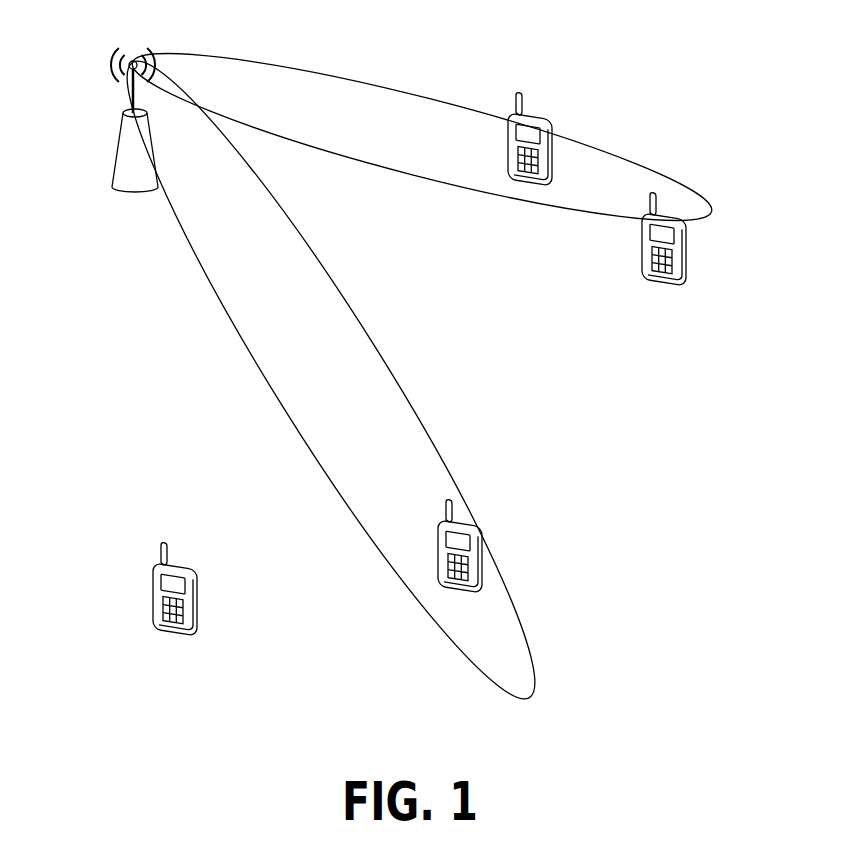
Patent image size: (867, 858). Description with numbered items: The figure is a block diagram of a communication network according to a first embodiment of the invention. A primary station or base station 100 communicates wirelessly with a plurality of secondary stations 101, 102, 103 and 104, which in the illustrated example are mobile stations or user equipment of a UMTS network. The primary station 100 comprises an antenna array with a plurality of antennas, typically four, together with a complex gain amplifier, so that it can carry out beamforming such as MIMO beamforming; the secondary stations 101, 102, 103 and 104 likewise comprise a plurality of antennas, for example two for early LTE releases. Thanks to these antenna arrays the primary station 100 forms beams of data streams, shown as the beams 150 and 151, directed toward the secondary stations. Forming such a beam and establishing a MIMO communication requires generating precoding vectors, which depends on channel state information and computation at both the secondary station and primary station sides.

The primary station 100 is at (117, 148).
The secondary station 101 is at (508, 154).
The secondary station 102 is at (688, 250).
The secondary station 103 is at (486, 565).
The secondary station 104 is at (152, 592).
The beam 150 is at (288, 412).
The beam 151 is at (432, 98).